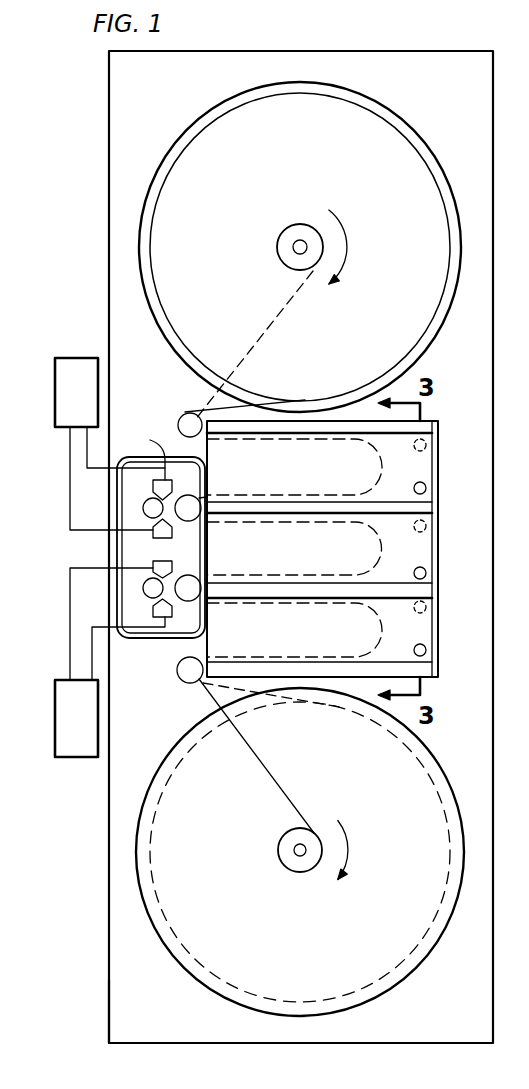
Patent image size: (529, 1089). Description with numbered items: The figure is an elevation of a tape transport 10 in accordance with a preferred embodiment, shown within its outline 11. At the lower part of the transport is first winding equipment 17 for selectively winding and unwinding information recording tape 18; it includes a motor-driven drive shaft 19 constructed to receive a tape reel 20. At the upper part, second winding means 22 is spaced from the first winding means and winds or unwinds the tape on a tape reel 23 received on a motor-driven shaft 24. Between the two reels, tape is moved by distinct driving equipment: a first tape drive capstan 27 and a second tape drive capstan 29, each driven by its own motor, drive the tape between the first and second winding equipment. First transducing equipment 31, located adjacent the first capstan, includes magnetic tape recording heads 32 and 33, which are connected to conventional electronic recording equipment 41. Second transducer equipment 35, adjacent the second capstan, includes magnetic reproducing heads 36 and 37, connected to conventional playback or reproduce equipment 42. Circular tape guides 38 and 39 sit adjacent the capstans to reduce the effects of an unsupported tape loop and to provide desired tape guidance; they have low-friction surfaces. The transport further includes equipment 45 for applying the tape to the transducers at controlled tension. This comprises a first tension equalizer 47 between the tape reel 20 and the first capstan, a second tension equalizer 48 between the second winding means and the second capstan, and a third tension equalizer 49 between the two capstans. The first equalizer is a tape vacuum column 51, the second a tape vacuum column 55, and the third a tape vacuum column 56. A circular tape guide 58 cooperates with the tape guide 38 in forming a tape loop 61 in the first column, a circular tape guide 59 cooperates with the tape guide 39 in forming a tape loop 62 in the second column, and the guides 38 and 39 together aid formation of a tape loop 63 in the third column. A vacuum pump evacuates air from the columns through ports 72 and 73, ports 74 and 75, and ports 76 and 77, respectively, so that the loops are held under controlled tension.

The tape transport 10 is at (122, 993).
The housing 11 is at (446, 1014).
The first winding equipment 17 is at (318, 820).
The information recording tape 18 is at (199, 706).
The drive shaft 19 is at (298, 851).
The tape reel 20 is at (192, 969).
The second winding means 22 is at (320, 202).
The tape reel 23 is at (428, 118).
The shaft 24 is at (298, 248).
The first tape drive capstan 27 is at (143, 590).
The second tape drive capstan 29 is at (143, 505).
The first transducing equipment 31 is at (179, 608).
The magnetic tape recording head 32 is at (167, 641).
The magnetic tape recording head 33 is at (177, 567).
The second transducer equipment 35 is at (178, 492).
The magnetic reproducing head 36 is at (179, 532).
The magnetic reproducing head 37 is at (144, 450).
The circular tape guide 38 is at (199, 594).
The circular tape guide 39 is at (201, 500).
The electronic recording equipment 41 is at (89, 731).
The playback or reproduce equipment 42 is at (89, 407).
The tape tension applying equipment 45 is at (449, 449).
The first tension equalizer 47 is at (428, 651).
The second tension equalizer 48 is at (418, 466).
The third tension equalizer 49 is at (428, 574).
The tape vacuum column 51 is at (436, 668).
The tape vacuum column 55 is at (393, 453).
The tape vacuum column 56 is at (405, 557).
The circular tape guide 58 is at (180, 674).
The circular tape guide 59 is at (182, 416).
The tape loop 61 is at (290, 651).
The tape loop 62 is at (268, 437).
The tape loop 63 is at (320, 528).
The port 72 is at (403, 637).
The port 73 is at (432, 626).
The port 74 is at (427, 490).
The port 75 is at (450, 404).
The port 76 is at (440, 604).
The port 77 is at (428, 526).